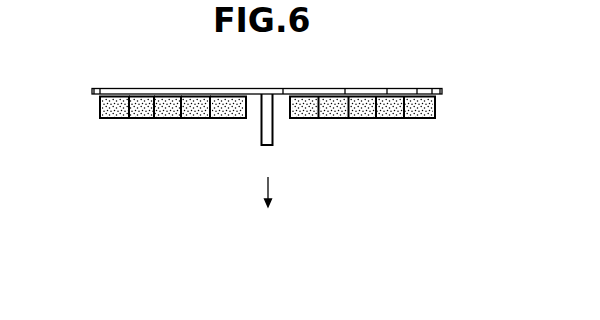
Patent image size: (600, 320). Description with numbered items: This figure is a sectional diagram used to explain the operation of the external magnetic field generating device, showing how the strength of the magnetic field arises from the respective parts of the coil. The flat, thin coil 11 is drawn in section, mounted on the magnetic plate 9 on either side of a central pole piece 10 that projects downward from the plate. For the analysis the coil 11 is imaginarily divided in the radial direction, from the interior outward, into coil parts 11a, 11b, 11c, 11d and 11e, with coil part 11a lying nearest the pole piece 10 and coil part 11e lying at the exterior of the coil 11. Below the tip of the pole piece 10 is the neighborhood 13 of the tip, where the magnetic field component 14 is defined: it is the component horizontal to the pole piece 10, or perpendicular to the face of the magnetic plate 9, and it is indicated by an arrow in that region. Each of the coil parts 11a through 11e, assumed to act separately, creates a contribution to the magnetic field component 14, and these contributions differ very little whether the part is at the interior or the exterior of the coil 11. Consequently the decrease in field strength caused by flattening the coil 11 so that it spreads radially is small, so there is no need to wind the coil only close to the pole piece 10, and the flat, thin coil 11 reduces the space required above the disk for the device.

The magnetic plate 9 is at (379, 88).
The pole piece 10 is at (272, 137).
The coil 11 is at (436, 108).
The coil part 11a is at (233, 118).
The coil part 11b is at (200, 118).
The coil part 11c is at (163, 118).
The coil part 11d is at (138, 118).
The coil part 11e is at (100, 118).
The neighborhood of the tip of the pole piece 13 is at (270, 178).
The magnetic field component 14 is at (262, 188).